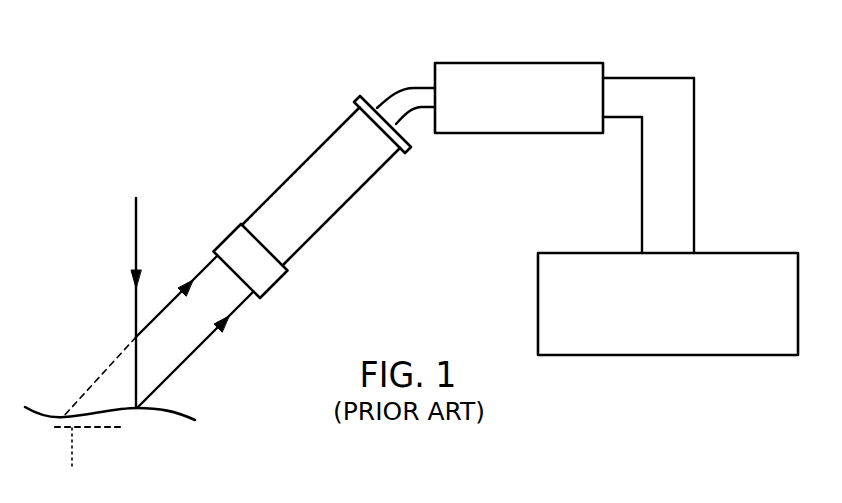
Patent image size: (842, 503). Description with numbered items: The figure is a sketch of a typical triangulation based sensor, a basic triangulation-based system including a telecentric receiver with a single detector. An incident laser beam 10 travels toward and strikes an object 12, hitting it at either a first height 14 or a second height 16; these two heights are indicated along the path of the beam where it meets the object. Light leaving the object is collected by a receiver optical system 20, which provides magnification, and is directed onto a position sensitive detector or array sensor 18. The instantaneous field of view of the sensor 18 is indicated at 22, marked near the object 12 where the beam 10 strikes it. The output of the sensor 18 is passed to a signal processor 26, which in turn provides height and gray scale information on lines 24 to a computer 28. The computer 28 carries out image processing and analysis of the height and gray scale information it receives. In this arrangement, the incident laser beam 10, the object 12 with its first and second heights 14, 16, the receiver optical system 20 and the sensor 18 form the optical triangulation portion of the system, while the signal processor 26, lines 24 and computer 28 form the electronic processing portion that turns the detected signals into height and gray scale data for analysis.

The incident laser beam 10 is at (137, 223).
The object 12 is at (181, 416).
The first height 14 is at (138, 412).
The second height 16 is at (134, 339).
The position sensitive detector or array sensor 18 is at (357, 98).
The receiver optical system 20 is at (277, 279).
The instantaneous field of view 22 is at (85, 416).
The lines 24 is at (694, 166).
The signal processor 26 is at (557, 63).
The computer 28 is at (745, 253).